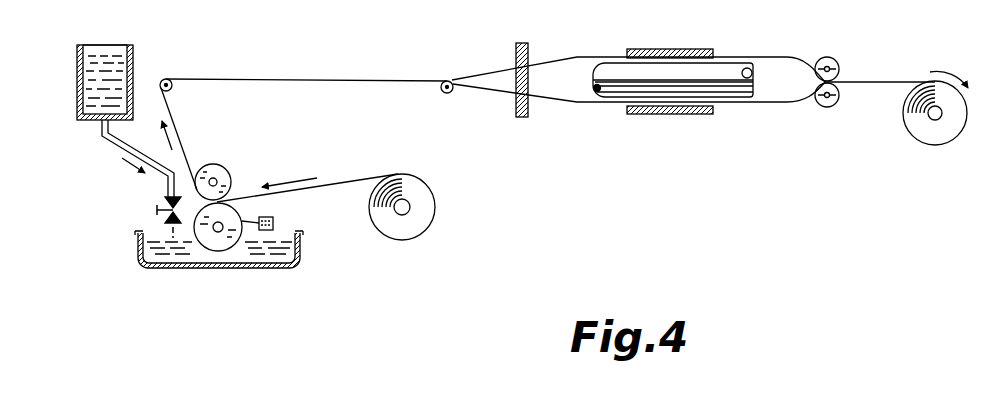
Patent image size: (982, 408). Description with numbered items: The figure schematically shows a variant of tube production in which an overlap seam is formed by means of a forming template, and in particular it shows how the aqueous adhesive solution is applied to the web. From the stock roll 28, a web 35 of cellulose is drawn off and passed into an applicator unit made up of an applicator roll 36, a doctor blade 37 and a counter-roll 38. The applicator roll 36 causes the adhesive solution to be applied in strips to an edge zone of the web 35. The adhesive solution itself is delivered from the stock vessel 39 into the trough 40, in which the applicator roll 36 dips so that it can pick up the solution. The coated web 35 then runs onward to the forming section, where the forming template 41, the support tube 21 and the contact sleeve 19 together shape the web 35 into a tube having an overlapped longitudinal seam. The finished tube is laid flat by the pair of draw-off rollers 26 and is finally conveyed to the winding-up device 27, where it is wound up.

The contact sleeve 19 is at (690, 49).
The support tube 21 is at (725, 72).
The pair of draw-off rollers 26 is at (838, 61).
The winding-up device 27 is at (932, 132).
The stock roll 28 is at (435, 214).
The web 35 is at (353, 176).
The applicator roll 36 is at (220, 242).
The doctor blade 37 is at (274, 222).
The counter-roll 38 is at (220, 166).
The stock vessel 39 is at (76, 64).
The trough 40 is at (243, 271).
The forming template 41 is at (524, 43).